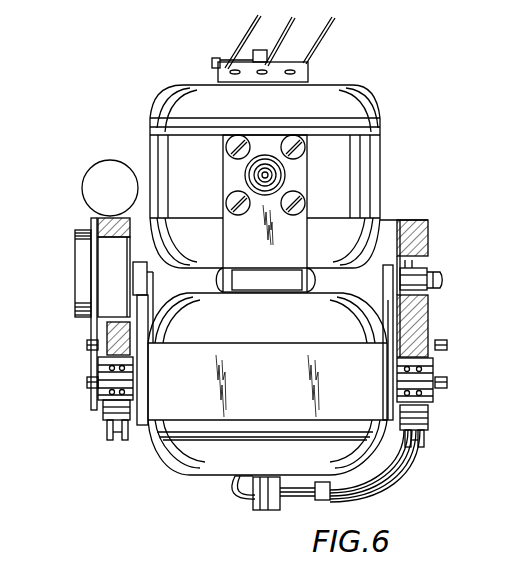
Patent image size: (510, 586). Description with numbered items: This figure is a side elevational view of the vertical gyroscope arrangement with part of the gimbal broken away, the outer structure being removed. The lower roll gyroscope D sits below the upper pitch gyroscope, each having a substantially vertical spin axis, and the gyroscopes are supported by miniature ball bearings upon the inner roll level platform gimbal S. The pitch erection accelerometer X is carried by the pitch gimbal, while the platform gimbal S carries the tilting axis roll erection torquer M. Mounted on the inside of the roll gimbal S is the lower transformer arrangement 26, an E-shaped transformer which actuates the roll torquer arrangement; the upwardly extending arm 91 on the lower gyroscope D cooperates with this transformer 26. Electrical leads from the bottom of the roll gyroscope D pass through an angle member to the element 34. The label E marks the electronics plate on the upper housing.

The electronics plate E is at (297, 238).
The pitch erection accelerometer X is at (86, 185).
The tilting axis roll erection torquer M is at (83, 276).
The lower roll gyroscope D is at (178, 410).
The inner roll level platform gimbal S is at (420, 312).
The lower transformer arrangement 26 is at (415, 271).
The upwardly extending arm 91 is at (388, 310).
The element 34 is at (428, 433).